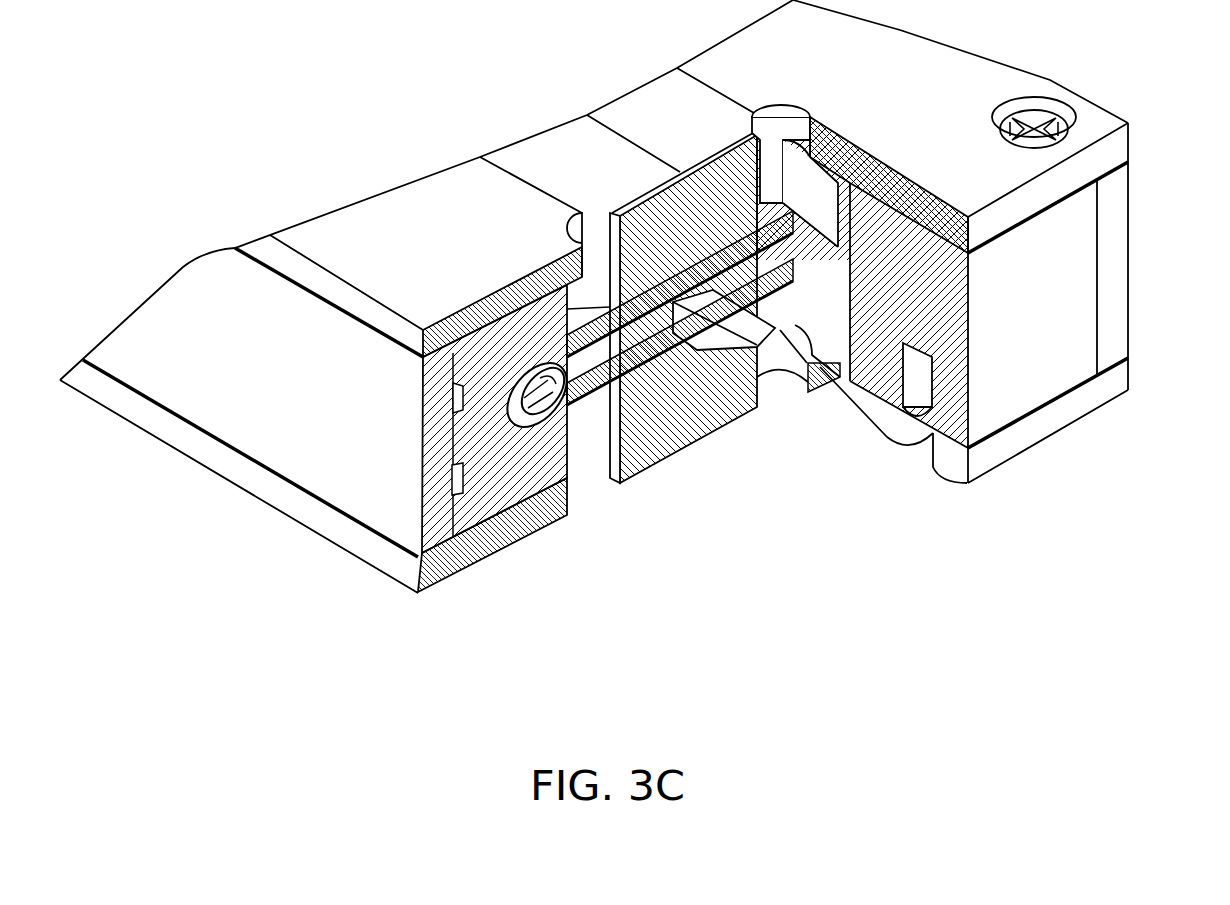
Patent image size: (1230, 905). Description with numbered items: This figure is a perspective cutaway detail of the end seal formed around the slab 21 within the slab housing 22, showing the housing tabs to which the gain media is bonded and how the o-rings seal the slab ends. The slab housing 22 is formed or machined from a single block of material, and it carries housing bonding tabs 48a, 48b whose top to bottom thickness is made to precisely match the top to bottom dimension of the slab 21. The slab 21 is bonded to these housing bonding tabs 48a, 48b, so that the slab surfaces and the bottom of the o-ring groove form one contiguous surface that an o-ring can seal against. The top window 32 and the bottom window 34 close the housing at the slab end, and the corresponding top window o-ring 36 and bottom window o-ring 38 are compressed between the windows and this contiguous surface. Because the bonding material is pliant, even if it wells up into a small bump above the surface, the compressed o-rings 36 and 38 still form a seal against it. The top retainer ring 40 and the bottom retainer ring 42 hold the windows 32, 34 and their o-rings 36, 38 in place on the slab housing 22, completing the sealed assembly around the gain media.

The top retainer ring 40 is at (1133, 141).
The slab housing 22 is at (1097, 243).
The bottom retainer ring 42 is at (350, 557).
The slab 21 is at (720, 430).
The bottom window 34 is at (605, 386).
The bottom window o-ring 38 is at (640, 377).
The housing bonding tab 48b is at (667, 367).
The housing bonding tab 48a is at (773, 313).
The top window o-ring 36 is at (790, 300).
The top window 32 is at (815, 365).